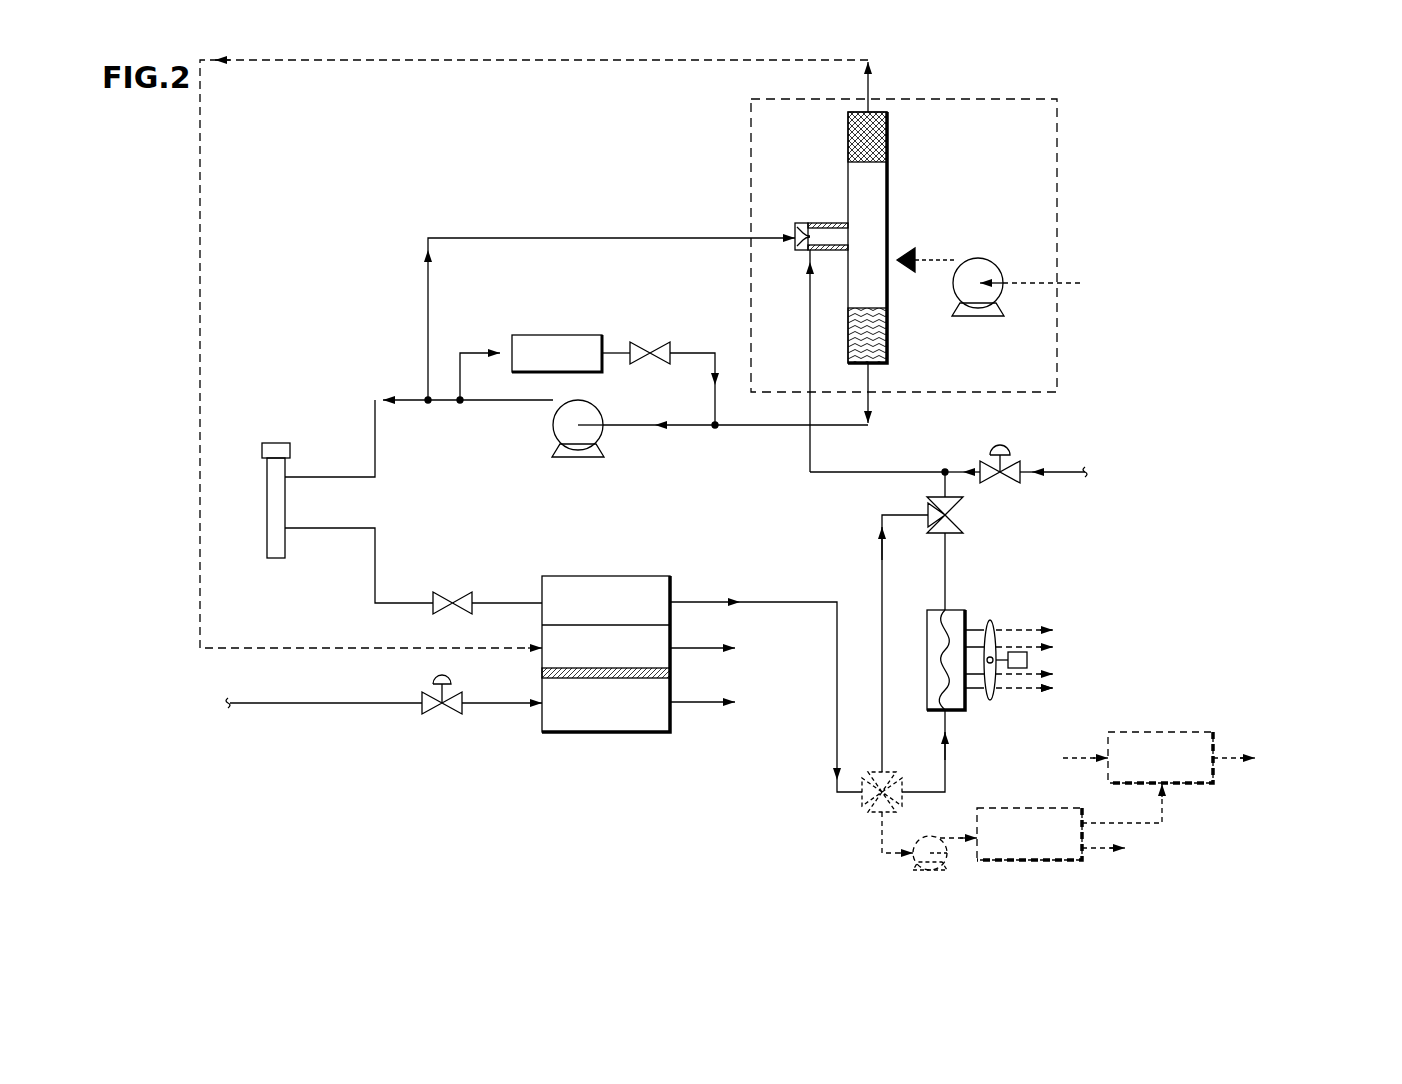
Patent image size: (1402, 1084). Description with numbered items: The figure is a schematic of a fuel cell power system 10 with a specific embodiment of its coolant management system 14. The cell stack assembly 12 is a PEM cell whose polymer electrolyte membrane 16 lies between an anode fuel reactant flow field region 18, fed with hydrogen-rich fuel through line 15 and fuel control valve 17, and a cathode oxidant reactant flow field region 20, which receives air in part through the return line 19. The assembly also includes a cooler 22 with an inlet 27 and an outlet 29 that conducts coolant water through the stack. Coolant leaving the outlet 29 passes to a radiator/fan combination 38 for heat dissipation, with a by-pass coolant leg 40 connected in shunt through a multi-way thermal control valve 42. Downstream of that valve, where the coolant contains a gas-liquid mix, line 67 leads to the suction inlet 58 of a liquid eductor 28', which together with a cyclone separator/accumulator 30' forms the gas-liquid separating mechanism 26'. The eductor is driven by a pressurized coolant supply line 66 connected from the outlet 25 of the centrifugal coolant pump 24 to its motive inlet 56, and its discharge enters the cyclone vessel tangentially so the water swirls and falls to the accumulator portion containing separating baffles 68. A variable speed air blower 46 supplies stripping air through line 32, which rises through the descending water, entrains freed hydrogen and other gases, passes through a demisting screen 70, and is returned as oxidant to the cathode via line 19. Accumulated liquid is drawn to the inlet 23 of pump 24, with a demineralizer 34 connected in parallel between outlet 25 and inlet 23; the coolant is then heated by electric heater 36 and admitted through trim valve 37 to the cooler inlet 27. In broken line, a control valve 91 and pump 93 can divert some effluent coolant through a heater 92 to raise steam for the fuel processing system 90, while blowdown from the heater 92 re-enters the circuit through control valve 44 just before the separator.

The fuel cell power system 10 is at (151, 192).
The fuel cell stack assembly 12 is at (660, 630).
The coolant management system 14 is at (411, 396).
The fuel supply line 15 is at (490, 703).
The polymer electrolyte membrane 16 is at (672, 676).
The fuel control valve 17 is at (440, 700).
The anode fuel reactant flow field region 18 is at (665, 720).
The return line 19 is at (255, 648).
The cathode oxidant reactant flow field region 20 is at (665, 641).
The cooler 22 is at (562, 576).
The pump inlet 23 is at (603, 428).
The coolant pump 24 is at (600, 413).
The pump outlet 25 is at (480, 400).
The gas-liquid separating mechanism 26' is at (931, 261).
The cooler inlet 27 is at (540, 602).
The liquid eductor 28' is at (826, 206).
The cooler outlet 29 is at (672, 601).
The cyclone separator/accumulator 30' is at (925, 214).
The stripping air line 32 is at (921, 259).
The demineralizer 34 is at (557, 336).
The electric heater 36 is at (267, 493).
The trim valve 37 is at (455, 602).
The radiator/fan combination 38 is at (989, 616).
The by-pass coolant leg 40 is at (882, 596).
The multi-way thermal control valve 42 is at (950, 518).
The control valve 44 is at (1010, 466).
The variable speed air blower 46 is at (997, 267).
The motive inlet 56 is at (796, 234).
The suction inlet 58 is at (813, 253).
The pressurized coolant supply line 66 is at (472, 238).
The suction line 67 is at (860, 472).
The separating baffles 68 is at (887, 321).
The demisting screen 70 is at (887, 121).
The fuel processing system 90 is at (1146, 731).
The control valve 91 is at (868, 806).
The heater 92 is at (1030, 808).
The pump 93 is at (928, 838).